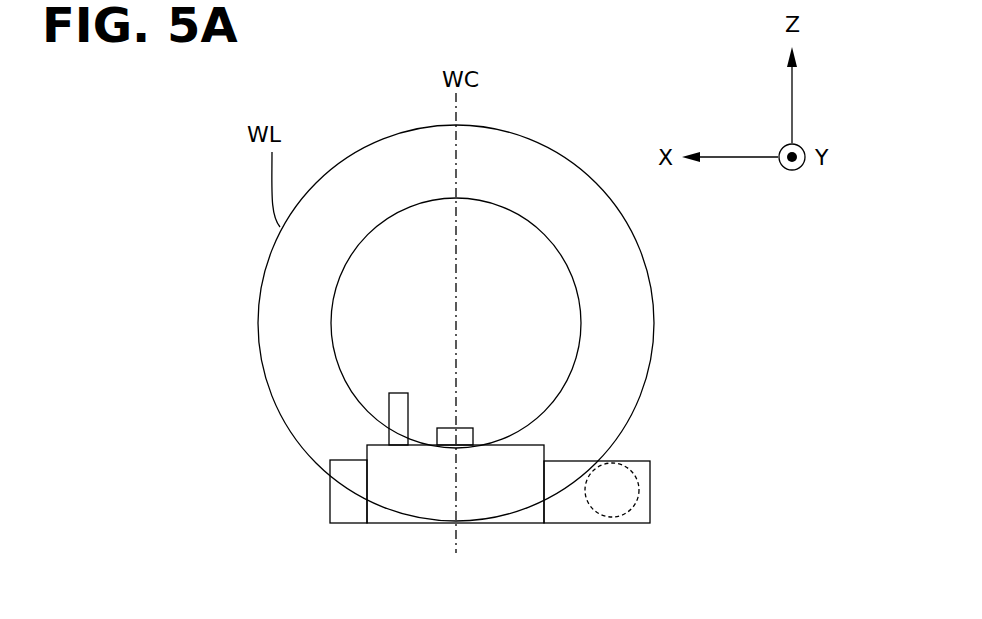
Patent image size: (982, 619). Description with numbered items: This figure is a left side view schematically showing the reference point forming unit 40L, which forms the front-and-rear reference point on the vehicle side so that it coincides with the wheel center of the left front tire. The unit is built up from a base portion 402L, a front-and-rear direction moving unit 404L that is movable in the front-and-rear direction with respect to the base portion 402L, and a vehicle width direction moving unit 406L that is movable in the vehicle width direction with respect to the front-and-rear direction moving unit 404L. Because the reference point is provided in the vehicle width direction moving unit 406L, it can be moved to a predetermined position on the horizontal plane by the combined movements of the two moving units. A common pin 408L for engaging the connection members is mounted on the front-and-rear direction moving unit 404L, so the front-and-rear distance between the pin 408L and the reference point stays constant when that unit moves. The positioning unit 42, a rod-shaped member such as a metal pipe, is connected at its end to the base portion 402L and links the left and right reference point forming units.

The reference point forming unit 40L is at (700, 380).
The base portion 402L is at (330, 493).
The front-and-rear direction moving unit 404L is at (367, 445).
The vehicle width direction moving unit 406L is at (473, 436).
The common pin 408L is at (390, 430).
The positioning unit 42 is at (640, 487).